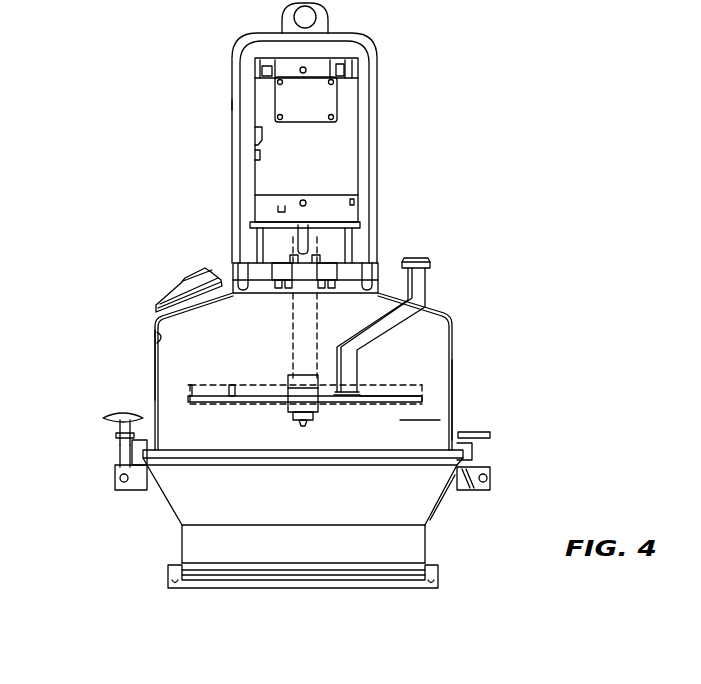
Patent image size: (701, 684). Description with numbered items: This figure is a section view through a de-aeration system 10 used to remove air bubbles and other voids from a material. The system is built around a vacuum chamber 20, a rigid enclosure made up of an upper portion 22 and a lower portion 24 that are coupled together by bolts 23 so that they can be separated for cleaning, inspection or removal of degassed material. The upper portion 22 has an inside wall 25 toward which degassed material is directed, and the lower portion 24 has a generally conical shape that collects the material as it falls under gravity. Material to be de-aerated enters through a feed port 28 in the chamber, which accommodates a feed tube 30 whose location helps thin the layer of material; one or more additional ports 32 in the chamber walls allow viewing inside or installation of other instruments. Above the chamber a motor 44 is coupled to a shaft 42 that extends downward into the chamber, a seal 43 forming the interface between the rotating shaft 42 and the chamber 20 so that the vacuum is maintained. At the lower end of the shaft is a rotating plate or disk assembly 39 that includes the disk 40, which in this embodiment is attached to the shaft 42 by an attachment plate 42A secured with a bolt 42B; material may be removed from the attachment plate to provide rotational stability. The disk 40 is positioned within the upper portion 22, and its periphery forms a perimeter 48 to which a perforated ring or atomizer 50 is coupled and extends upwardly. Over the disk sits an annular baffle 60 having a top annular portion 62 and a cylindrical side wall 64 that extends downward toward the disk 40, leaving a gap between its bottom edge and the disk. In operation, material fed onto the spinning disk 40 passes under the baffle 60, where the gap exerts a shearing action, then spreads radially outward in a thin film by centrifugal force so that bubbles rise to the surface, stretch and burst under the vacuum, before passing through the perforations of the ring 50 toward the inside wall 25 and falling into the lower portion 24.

The de-aeration system 10 is at (128, 90).
The vacuum chamber 20 is at (455, 340).
The upper portion 22 is at (453, 373).
The bolts 23 is at (115, 418).
The lower portion 24 is at (440, 503).
The inside wall 25 is at (155, 330).
The feed port 28 is at (423, 300).
The feed tube 30 is at (416, 262).
The additional ports 32 is at (195, 278).
The rotating plate or disk assembly 39 is at (220, 418).
The disk 40 is at (400, 420).
The shaft 42 is at (283, 250).
The attachment plate 42A is at (300, 422).
The bolt 42B is at (300, 426).
The seal 43 is at (335, 268).
The motor 44 is at (355, 125).
The perimeter 48 is at (395, 398).
The perforated ring or atomizer 50 is at (188, 395).
The annular baffle 60 is at (232, 385).
The top annular portion 62 is at (265, 385).
The cylindrical side wall 64 is at (190, 385).